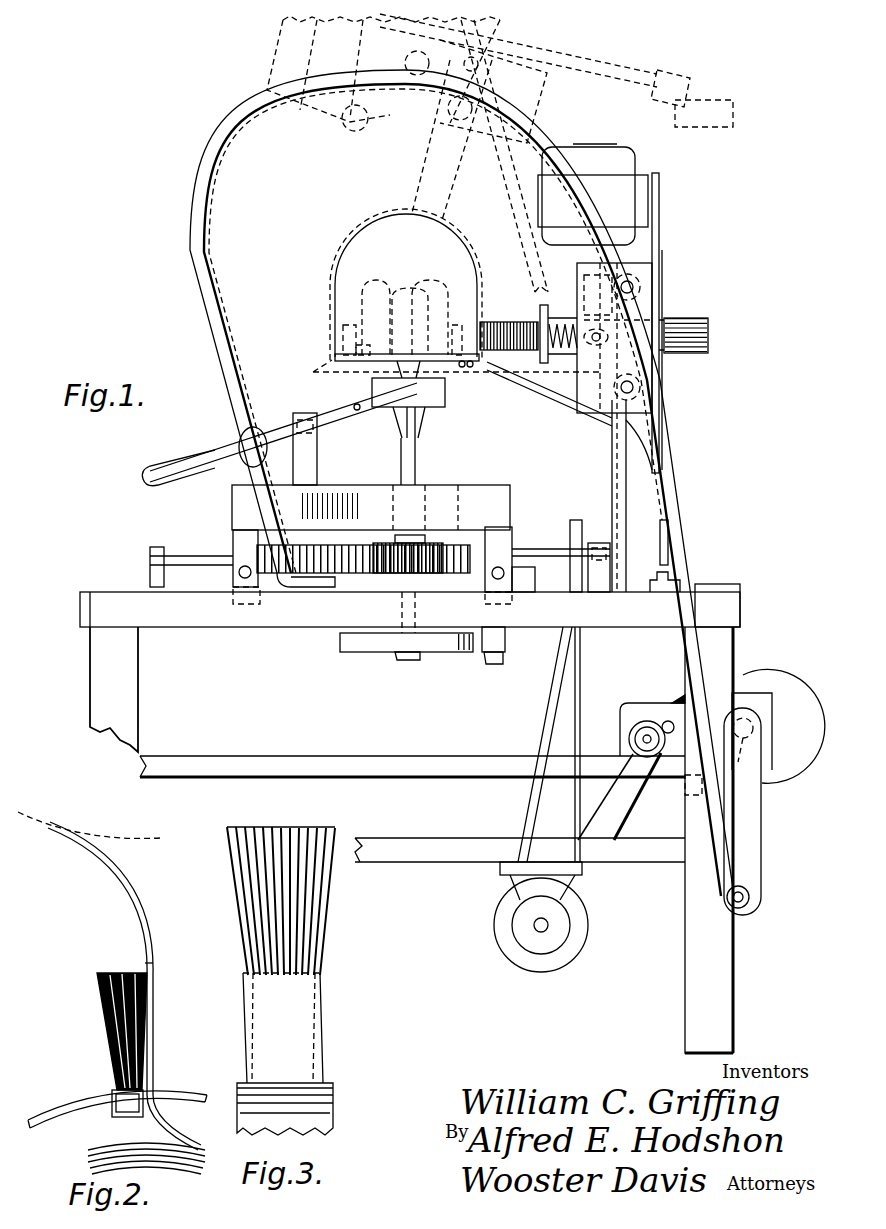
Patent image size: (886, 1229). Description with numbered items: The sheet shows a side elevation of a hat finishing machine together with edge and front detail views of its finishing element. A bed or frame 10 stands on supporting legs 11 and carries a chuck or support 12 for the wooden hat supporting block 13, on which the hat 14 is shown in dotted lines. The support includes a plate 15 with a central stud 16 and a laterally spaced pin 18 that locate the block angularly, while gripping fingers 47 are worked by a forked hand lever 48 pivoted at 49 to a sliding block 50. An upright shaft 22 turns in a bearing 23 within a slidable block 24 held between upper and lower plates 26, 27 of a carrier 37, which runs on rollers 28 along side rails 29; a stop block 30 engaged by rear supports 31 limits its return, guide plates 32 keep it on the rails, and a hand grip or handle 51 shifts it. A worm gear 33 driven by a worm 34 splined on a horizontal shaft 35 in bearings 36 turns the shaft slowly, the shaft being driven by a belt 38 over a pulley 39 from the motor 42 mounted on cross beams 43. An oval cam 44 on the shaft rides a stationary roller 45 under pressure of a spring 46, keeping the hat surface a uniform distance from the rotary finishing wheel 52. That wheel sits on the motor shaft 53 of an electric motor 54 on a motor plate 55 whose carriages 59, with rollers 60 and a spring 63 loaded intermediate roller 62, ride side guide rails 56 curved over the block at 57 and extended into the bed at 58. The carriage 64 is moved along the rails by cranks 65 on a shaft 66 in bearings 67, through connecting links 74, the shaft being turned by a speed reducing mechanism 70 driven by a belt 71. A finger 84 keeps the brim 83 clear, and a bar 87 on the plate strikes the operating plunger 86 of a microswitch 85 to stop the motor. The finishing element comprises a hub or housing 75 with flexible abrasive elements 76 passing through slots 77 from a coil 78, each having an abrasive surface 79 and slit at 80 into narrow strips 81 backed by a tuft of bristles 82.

In FIG. 1, the bed or frame 10 is at (115, 627).
In FIG. 1, the supporting legs 11 is at (138, 705).
In FIG. 1, the chuck or support 12 is at (378, 368).
In FIG. 1, the hat supporting block 13 is at (338, 283).
In FIG. 1, the hat 14 is at (340, 250).
In FIG. 2, the hat 14 is at (130, 842).
In FIG. 1, the plate 15 is at (440, 362).
In FIG. 1, the central stud 16 is at (412, 320).
In FIG. 1, the laterally spaced pin 18 is at (461, 321).
In FIG. 1, the upright shaft 22 is at (418, 462).
In FIG. 1, the bearing 23 is at (462, 490).
In FIG. 1, the slidable block 24 is at (500, 480).
In FIG. 1, the upper plate 26 is at (396, 462).
In FIG. 1, the lower plate 27 is at (372, 542).
In FIG. 1, the rollers 28 is at (490, 596).
In FIG. 1, the side rails 29 is at (140, 598).
In FIG. 1, the stop block 30 is at (522, 566).
In FIG. 1, the rear supports 31 is at (505, 535).
In FIG. 1, the guide plates 32 is at (505, 602).
In FIG. 1, the worm gear 33 is at (445, 540).
In FIG. 1, the worm 34 is at (353, 580).
In FIG. 1, the horizontal shaft 35 is at (206, 556).
In FIG. 1, the bearings 36 is at (160, 546).
In FIG. 1, the carrier 37 is at (527, 497).
In FIG. 1, the belt 38 is at (582, 690).
In FIG. 1, the pulley 39 is at (583, 528).
In FIG. 1, the motor 42 is at (556, 962).
In FIG. 1, the cross beams 43 is at (638, 852).
In FIG. 1, the oval cam 44 is at (398, 658).
In FIG. 1, the stationary roller 45 is at (505, 655).
In FIG. 1, the spring 46 is at (360, 492).
In FIG. 1, the gripping fingers 47 is at (335, 328).
In FIG. 1, the forked hand lever 48 is at (196, 456).
In FIG. 1, the pivot 49 is at (300, 414).
In FIG. 1, the sliding block 50 is at (432, 408).
In FIG. 1, the hand grip or handle 51 is at (242, 438).
In FIG. 1, the rotary finishing wheel 52 is at (423, 152).
In FIG. 1, the motor shaft 53 is at (576, 290).
In FIG. 1, the electric motor 54 is at (325, 120).
In FIG. 1, the motor plate 55 is at (662, 222).
In FIG. 1, the side guide rails 56 is at (658, 476).
In FIG. 1, the curved rail portion 57 is at (555, 140).
In FIG. 1, the downwardly extended rail ends 58 is at (242, 508).
In FIG. 1, the carriages 59 is at (553, 98).
In FIG. 1, the rollers 60 is at (645, 285).
In FIG. 1, the intermediate roller 62 is at (593, 350).
In FIG. 1, the spring 63 is at (600, 345).
In FIG. 1, the carriage 64 is at (676, 194).
In FIG. 1, the cranks 65 is at (757, 848).
In FIG. 1, the shaft 66 is at (752, 750).
In FIG. 1, the bearings 67 is at (762, 690).
In FIG. 1, the speed reducing mechanism 70 is at (640, 702).
In FIG. 1, the belt 71 is at (624, 822).
In FIG. 1, the connecting rod or link 74 is at (503, 210).
In FIG. 2, the hub or housing 75 is at (186, 1090).
In FIG. 3, the hub or housing 75 is at (332, 1093).
In FIG. 1, the flexible abrasive elements 76 is at (708, 318).
In FIG. 2, the flexible abrasive elements 76 is at (154, 963).
In FIG. 3, the flexible abrasive elements 76 is at (328, 962).
In FIG. 2, the slots 77 is at (158, 1072).
In FIG. 2, the coil 78 is at (102, 1152).
In FIG. 2, the abrasive surface 79 is at (146, 918).
In FIG. 3, the abrasive surface 79 is at (248, 893).
In FIG. 3, the longitudinal slits 80 is at (327, 881).
In FIG. 2, the narrow strips 81 is at (80, 852).
In FIG. 3, the narrow strips 81 is at (238, 872).
In FIG. 2, the tuft of bristles 82 is at (108, 1033).
In FIG. 3, the tuft of bristles 82 is at (322, 1018).
In FIG. 1, the brim 83 is at (313, 370).
In FIG. 1, the finger 84 is at (522, 378).
In FIG. 1, the microswitch 85 is at (658, 574).
In FIG. 1, the operating plunger 86 is at (658, 556).
In FIG. 1, the bar 87 is at (692, 98).